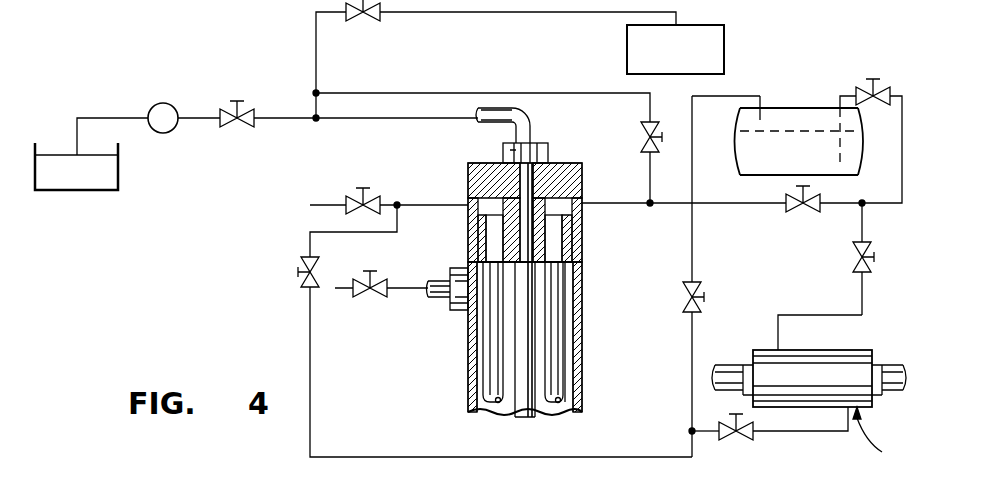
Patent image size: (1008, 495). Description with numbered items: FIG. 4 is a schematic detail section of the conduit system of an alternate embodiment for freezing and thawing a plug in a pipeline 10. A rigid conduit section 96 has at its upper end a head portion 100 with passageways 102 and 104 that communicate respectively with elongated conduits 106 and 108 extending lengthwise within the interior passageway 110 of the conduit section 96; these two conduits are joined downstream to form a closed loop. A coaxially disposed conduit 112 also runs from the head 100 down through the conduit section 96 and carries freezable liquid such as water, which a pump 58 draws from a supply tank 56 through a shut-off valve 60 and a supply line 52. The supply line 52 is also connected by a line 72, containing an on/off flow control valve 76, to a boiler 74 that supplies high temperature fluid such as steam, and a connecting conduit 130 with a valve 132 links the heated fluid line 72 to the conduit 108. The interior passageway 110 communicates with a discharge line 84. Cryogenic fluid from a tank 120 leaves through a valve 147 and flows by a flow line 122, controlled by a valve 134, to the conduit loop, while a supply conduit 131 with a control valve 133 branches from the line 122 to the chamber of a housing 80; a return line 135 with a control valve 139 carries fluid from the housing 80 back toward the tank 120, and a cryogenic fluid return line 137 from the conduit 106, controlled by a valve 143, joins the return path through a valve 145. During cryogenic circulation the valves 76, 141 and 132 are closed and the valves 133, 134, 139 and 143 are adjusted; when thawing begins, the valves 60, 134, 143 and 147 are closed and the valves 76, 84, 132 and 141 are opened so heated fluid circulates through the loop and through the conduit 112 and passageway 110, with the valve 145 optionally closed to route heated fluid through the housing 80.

The pipeline 10 is at (878, 400).
The supply line 52 is at (378, 118).
The supply tank 56 is at (118, 170).
The pump 58 is at (165, 103).
The shut-off valve 60 is at (228, 126).
The heated fluid flow line 72 is at (316, 72).
The boiler 74 is at (724, 62).
The on/off flow control valve 76 is at (360, 21).
The housing 80 is at (872, 440).
The discharge line 84 is at (370, 300).
The rigid conduit section 96 is at (583, 352).
The head portion 100 is at (565, 163).
The passageway 102 is at (490, 240).
The passageway 104 is at (555, 240).
The elongated conduit 106 is at (493, 372).
The elongated conduit 108 is at (560, 372).
The interior passageway 110 is at (570, 332).
The coaxial conduit 112 is at (530, 412).
The cryogenic fluid tank 120 is at (732, 150).
The flow line 122 is at (753, 205).
The connecting conduit 130 is at (448, 93).
The supply conduit 131 is at (818, 315).
The valve 132 is at (652, 152).
The control valve 133 is at (855, 258).
The valve 134 is at (808, 212).
The return line 135 is at (770, 431).
The cryogenic fluid return line 137 is at (345, 457).
The control valve 139 is at (736, 440).
The valve 141 is at (358, 195).
The control valve 143 is at (305, 287).
The valve 145 is at (683, 297).
The valve 147 is at (872, 86).